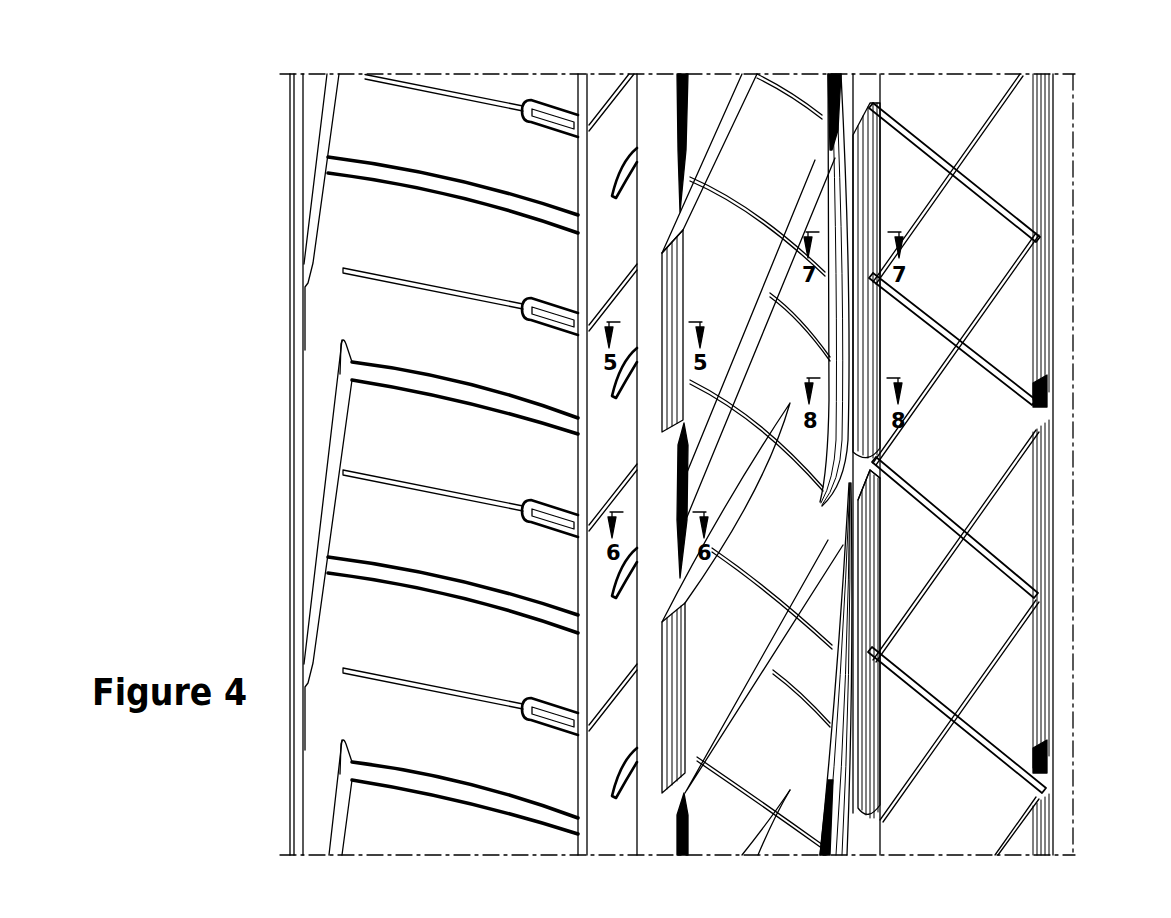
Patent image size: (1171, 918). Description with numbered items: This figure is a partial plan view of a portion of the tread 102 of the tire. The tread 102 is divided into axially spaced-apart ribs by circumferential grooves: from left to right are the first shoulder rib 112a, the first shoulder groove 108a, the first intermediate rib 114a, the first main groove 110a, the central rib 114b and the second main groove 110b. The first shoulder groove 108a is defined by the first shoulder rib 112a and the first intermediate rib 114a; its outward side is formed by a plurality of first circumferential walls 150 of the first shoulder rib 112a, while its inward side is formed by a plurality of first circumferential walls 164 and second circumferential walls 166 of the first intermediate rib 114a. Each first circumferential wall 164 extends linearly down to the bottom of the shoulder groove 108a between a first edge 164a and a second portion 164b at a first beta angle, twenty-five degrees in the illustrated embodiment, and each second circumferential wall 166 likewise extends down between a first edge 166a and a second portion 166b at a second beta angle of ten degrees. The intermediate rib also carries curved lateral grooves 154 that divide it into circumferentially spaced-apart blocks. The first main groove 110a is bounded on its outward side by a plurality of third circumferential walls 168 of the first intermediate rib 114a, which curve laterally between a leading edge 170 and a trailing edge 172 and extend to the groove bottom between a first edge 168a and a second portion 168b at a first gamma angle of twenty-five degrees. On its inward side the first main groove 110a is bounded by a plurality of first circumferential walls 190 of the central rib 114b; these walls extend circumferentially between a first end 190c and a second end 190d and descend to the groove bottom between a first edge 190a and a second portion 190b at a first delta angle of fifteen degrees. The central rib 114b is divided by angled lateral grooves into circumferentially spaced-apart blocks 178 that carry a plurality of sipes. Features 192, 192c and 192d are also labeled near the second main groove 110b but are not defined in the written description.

The tread 102 is at (266, 84).
The first shoulder rib 112a is at (485, 448).
The first shoulder groove 108a is at (647, 446).
The first intermediate rib 114a is at (757, 446).
The first main groove 110a is at (897, 443).
The central rib 114b is at (957, 443).
The second main groove 110b is at (1094, 448).
The first circumferential wall 150 is at (633, 215).
The curved lateral groove 154 is at (790, 222).
The first circumferential wall 164 is at (672, 296).
The first edge 164a is at (684, 245).
The second portion 164b is at (662, 270).
The second circumferential wall 166 is at (688, 492).
The first edge 166a is at (688, 443).
The second portion 166b is at (680, 470).
The third circumferential wall 168 is at (827, 300).
The first edge 168a is at (830, 740).
The second portion 168b is at (830, 758).
The leading edge 170 is at (810, 550).
The trailing edge 172 is at (827, 122).
The block 178 is at (980, 262).
The first circumferential wall 190 is at (870, 367).
The first edge 190a is at (882, 578).
The second portion 190b is at (880, 832).
The first end 190c is at (888, 462).
The second end 190d is at (872, 103).
The sipe wall 192 is at (1043, 178).
The sipe wall end 192c is at (1050, 432).
The sipe wall end 192d is at (1050, 408).